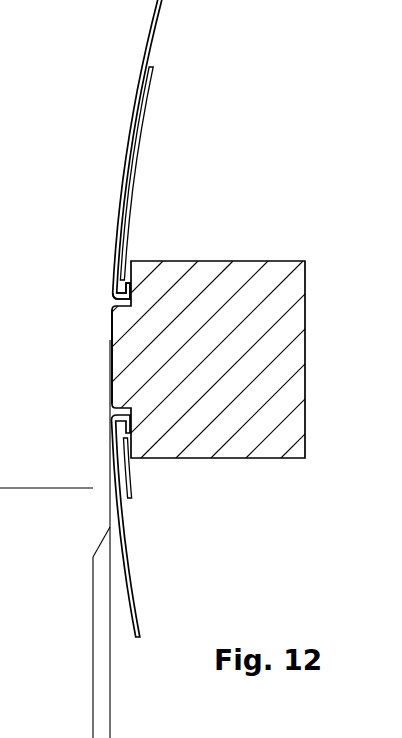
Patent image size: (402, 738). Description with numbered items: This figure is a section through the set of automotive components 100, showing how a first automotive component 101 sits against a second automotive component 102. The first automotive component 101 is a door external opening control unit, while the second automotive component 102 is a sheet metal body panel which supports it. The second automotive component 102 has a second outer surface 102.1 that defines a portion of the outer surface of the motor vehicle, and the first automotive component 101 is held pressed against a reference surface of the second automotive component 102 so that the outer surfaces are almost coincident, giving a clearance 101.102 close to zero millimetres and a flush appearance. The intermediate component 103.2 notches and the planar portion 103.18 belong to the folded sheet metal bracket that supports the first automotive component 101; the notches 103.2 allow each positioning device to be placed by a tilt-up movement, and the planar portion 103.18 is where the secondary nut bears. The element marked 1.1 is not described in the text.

The set of automotive components 100 is at (203, 38).
The first automotive component 101 is at (228, 415).
The clearance 101.102 is at (53, 698).
The second automotive component 102 is at (137, 138).
The second outer surface 102.1 is at (105, 272).
The contact face of mounting block 1.1 is at (105, 352).
The notches 103.2 is at (21, 13).
The planar portion 103.18 is at (33, 78).